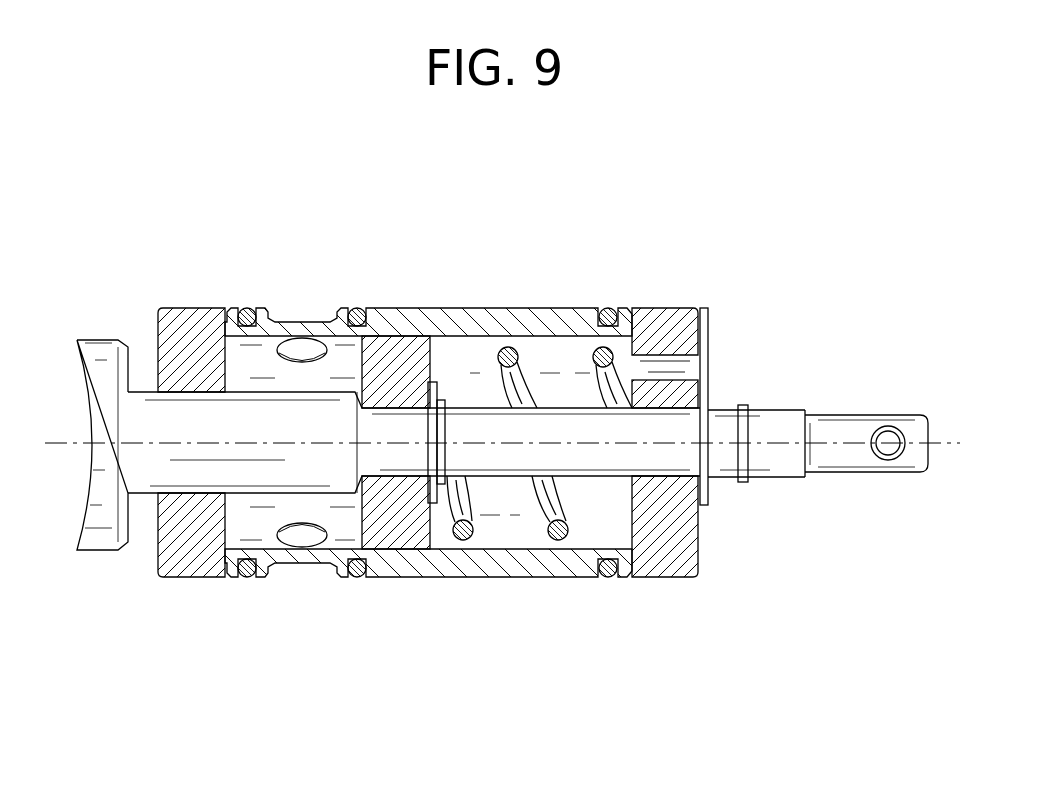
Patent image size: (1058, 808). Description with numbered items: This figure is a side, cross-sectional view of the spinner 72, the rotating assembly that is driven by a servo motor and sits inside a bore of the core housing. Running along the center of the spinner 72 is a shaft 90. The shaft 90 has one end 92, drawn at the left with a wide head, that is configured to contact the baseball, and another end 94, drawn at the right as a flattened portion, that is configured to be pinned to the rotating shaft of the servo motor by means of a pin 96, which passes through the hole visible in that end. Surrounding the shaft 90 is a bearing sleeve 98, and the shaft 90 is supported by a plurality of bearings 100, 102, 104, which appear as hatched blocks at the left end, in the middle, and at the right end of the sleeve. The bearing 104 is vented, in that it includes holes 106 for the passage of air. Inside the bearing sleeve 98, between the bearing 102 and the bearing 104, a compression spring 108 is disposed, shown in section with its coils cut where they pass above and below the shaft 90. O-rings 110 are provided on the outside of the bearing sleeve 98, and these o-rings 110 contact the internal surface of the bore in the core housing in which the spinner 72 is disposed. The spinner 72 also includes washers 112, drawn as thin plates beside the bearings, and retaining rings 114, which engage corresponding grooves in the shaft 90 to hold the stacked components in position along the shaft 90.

The spinner 72 is at (502, 470).
The shaft 90 is at (478, 422).
The end 92 is at (92, 420).
The end 94 is at (893, 415).
The pin 96 is at (888, 460).
The bearing sleeve 98 is at (545, 577).
The bearing 100 is at (188, 555).
The bearing 102 is at (393, 353).
The bearing 104 is at (660, 320).
The holes 106 is at (700, 368).
The compression spring 108 is at (513, 345).
The O-rings 110 is at (357, 577).
The washers 112 is at (430, 398).
The retaining rings 114 is at (441, 505).